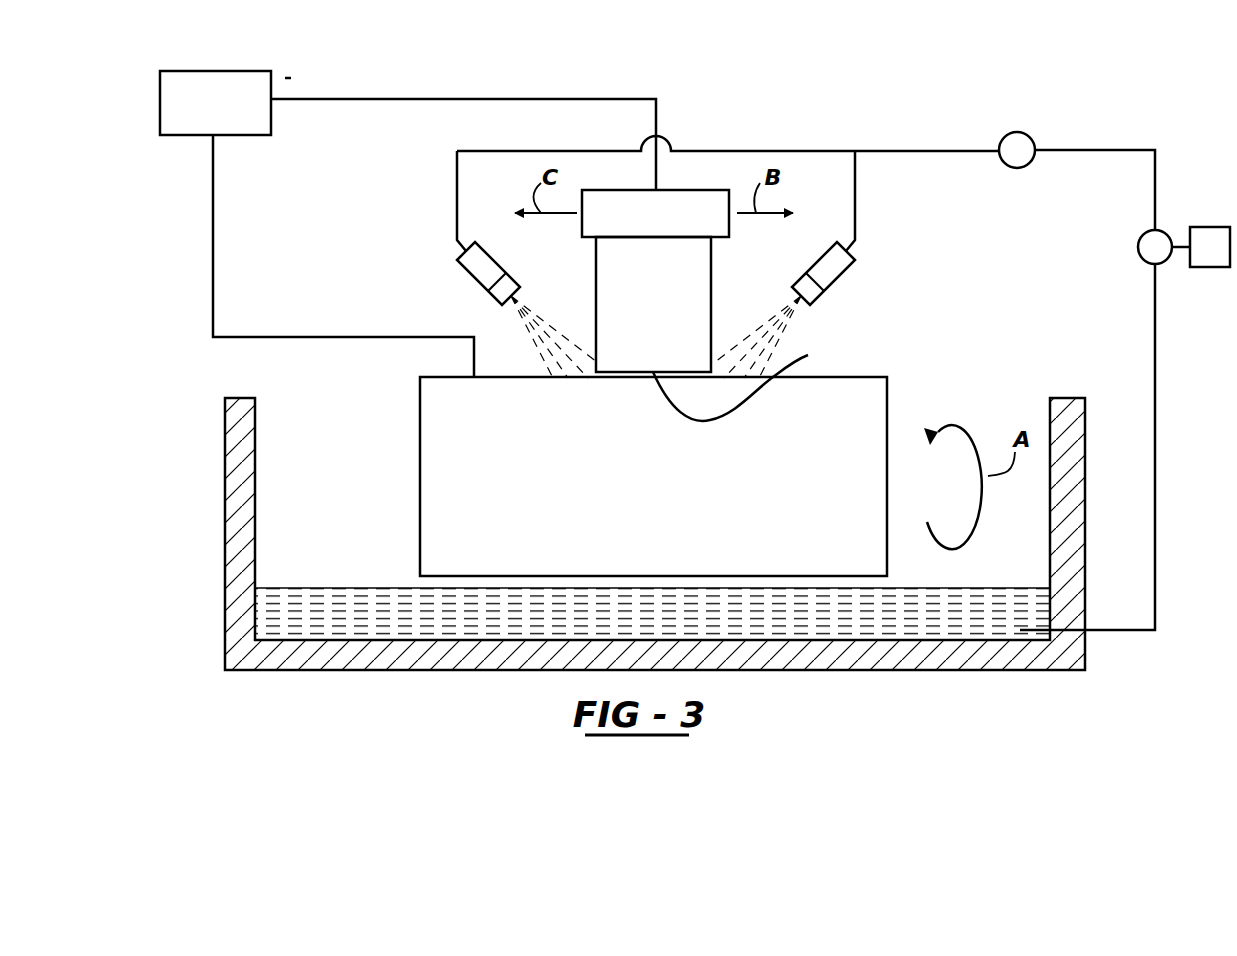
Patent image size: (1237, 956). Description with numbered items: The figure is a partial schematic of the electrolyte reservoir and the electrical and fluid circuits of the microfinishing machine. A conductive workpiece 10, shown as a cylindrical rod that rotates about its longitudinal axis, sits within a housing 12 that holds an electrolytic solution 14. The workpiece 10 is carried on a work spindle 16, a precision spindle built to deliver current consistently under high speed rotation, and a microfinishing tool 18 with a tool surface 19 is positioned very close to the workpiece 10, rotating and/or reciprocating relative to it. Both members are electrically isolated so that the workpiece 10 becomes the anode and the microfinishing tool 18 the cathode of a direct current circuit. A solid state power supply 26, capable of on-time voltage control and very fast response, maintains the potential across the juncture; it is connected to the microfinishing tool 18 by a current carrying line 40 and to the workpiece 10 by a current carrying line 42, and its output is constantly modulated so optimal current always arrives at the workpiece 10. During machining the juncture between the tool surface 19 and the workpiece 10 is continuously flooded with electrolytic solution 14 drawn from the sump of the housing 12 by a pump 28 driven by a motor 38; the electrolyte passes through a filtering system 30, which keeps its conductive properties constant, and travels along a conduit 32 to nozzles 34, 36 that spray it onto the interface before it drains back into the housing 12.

The workpiece 10 is at (860, 377).
The housing 12 is at (1086, 503).
The electrolytic solution 14 is at (967, 586).
The work spindle 16 is at (711, 283).
The microfinishing tool 18 is at (745, 379).
The tool surface 19 is at (630, 380).
The solid state power supply 26 is at (217, 71).
The pump 28 is at (1138, 245).
The filtering system 30 is at (1022, 133).
The conduit 32 is at (1157, 447).
The nozzle 34 is at (842, 280).
The nozzle 36 is at (468, 272).
The motor 38 is at (1208, 227).
The current carrying line 40 is at (437, 98).
The current carrying line 42 is at (370, 337).